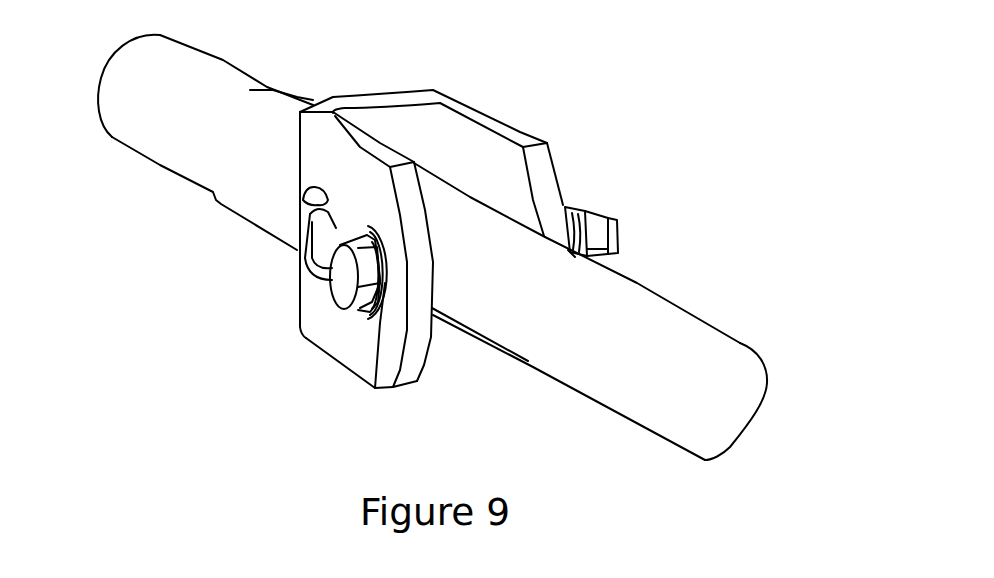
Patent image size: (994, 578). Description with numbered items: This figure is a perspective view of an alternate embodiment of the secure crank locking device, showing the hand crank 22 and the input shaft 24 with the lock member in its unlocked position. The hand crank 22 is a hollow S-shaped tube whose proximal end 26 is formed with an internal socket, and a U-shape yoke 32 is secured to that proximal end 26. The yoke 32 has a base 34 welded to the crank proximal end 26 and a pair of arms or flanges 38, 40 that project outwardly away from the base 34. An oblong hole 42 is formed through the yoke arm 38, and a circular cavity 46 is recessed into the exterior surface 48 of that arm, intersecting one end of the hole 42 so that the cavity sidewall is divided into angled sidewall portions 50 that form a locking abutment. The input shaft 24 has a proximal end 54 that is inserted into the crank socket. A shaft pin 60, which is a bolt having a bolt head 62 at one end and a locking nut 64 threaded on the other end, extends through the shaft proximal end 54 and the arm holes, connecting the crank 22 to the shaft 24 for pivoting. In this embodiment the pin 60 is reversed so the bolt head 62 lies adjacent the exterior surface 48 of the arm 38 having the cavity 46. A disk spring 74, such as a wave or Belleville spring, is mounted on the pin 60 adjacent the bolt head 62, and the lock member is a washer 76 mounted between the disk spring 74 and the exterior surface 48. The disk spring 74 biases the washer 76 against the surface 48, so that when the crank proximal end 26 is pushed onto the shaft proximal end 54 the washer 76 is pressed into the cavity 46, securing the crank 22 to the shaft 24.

The hand crank 22 is at (152, 142).
The input shaft 24 is at (727, 358).
The proximal end 26 is at (300, 96).
The yoke 32 is at (443, 228).
The yoke base 34 is at (393, 90).
The yoke arm 38 is at (300, 228).
The yoke arm 40 is at (533, 137).
The oblong hole 42 is at (345, 225).
The circular cavity 46 is at (299, 264).
The exterior surface 48 is at (385, 389).
The sidewall portion 50 is at (301, 202).
The proximal end 54 is at (458, 210).
The shaft pin 60 is at (622, 229).
The bolt head 62 is at (372, 392).
The locking nut 64 is at (582, 202).
The disk spring 74 is at (437, 318).
The washer 76 is at (430, 306).